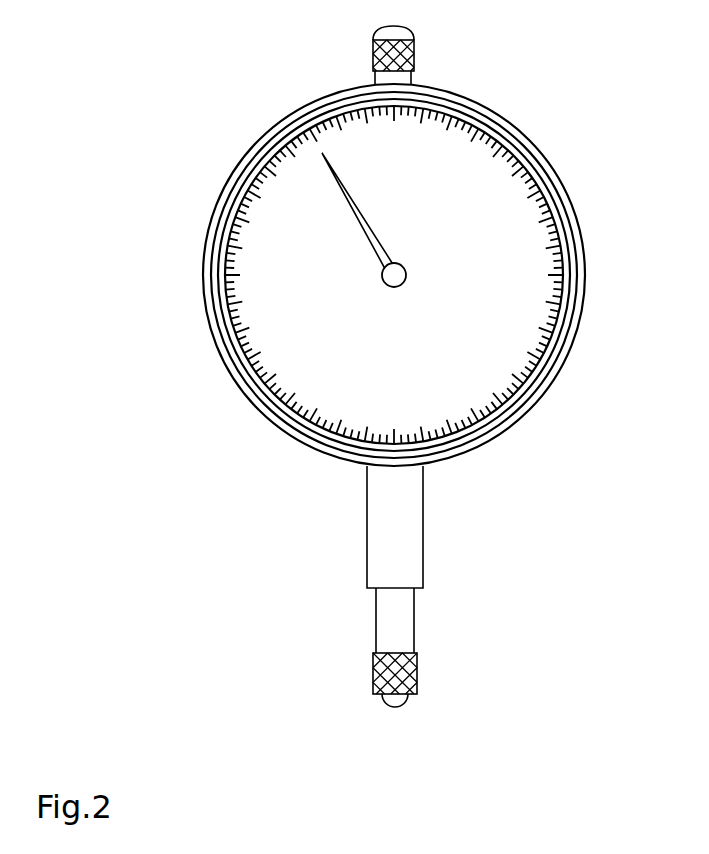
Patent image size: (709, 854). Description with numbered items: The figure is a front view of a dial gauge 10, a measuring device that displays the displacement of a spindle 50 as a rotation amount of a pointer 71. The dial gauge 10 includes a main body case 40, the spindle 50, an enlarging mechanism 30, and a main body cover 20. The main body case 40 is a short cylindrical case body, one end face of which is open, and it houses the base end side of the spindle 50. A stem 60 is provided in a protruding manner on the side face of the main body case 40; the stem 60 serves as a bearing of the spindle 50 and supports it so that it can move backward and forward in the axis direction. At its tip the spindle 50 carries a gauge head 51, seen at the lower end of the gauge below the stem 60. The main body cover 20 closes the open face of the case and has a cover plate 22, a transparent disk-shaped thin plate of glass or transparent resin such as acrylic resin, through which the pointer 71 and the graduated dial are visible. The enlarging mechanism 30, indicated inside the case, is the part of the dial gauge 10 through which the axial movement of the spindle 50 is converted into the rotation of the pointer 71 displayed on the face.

The dial gauge 10 is at (438, 379).
The main body cover 20 is at (570, 270).
The cover plate 22 is at (290, 375).
The enlarging mechanism 30 is at (495, 363).
The main body case 40 is at (582, 320).
The spindle 50 is at (400, 620).
The gauge head 51 is at (410, 676).
The stem 60 is at (402, 526).
The pointer 71 is at (348, 193).